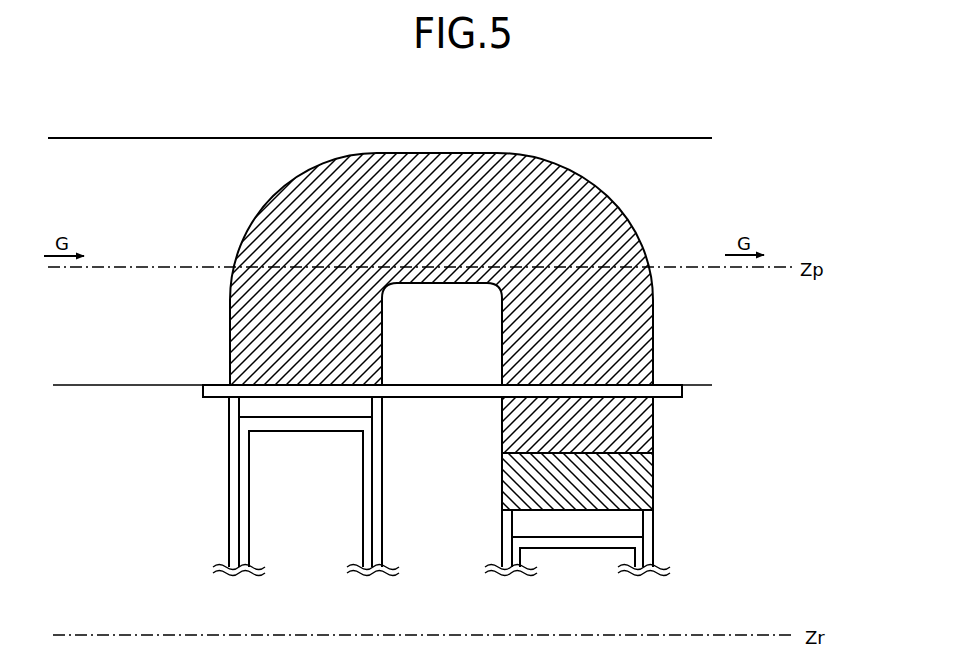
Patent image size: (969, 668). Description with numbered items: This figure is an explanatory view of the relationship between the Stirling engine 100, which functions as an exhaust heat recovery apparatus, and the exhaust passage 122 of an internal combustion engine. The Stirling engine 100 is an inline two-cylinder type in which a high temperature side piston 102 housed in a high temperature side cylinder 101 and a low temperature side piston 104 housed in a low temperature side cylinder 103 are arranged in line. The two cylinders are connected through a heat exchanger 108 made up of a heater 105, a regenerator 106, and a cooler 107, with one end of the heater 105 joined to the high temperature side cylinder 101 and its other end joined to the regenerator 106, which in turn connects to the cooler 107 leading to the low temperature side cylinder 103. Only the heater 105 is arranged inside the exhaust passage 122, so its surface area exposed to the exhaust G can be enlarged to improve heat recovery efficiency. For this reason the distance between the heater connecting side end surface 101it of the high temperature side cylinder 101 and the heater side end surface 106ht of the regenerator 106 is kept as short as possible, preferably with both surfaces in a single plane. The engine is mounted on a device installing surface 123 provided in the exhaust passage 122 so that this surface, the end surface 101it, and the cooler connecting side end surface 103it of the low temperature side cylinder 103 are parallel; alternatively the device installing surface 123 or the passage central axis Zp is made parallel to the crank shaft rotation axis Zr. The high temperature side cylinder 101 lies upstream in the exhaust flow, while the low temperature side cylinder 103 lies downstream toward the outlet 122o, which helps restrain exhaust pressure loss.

The Stirling engine 100 is at (184, 474).
The high temperature side cylinder 101 is at (378, 472).
The heater connecting side end surface 101it is at (336, 386).
The high temperature side piston 102 is at (370, 509).
The low temperature side cylinder 103 is at (503, 527).
The cooler connecting side end surface 103it is at (594, 506).
The low temperature side piston 104 is at (503, 548).
The heater 105 is at (612, 206).
The regenerator 106 is at (655, 418).
The heater side end surface 106ht is at (594, 386).
The cooler 107 is at (656, 502).
The heat exchanger 108 is at (224, 221).
The exhaust passage 122 is at (633, 137).
The outlet 122o is at (781, 176).
The device installing surface 123 is at (672, 389).